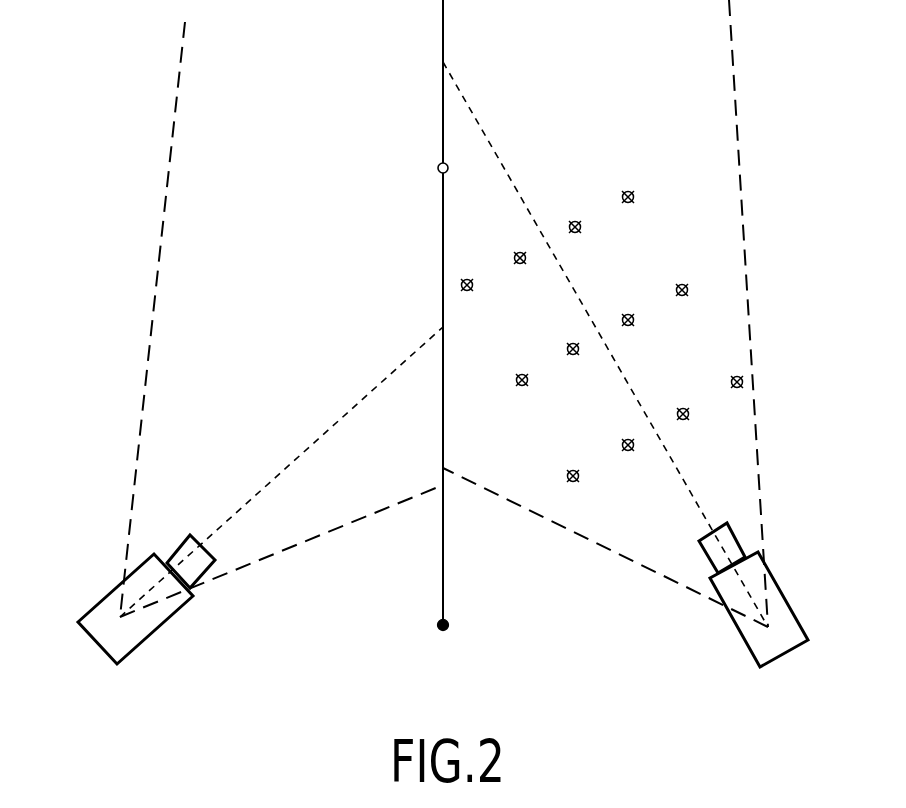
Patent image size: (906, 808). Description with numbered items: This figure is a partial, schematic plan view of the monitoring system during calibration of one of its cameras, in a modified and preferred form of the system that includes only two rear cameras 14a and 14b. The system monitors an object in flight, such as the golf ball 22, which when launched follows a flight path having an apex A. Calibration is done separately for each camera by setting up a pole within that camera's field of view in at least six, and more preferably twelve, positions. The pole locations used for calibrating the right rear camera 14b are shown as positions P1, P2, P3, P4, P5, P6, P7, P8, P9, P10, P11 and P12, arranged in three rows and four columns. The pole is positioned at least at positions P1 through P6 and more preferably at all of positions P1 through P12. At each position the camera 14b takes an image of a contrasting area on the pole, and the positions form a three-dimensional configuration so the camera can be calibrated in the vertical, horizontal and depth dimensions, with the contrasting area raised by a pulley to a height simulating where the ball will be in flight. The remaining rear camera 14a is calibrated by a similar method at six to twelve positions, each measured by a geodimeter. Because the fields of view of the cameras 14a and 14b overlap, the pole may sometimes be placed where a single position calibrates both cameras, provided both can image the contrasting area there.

The apex A is at (428, 168).
The rear camera 14a is at (93, 647).
The right rear camera 14b is at (783, 653).
The golf ball 22 is at (440, 632).
The pole position P1 is at (571, 469).
The pole position P2 is at (625, 438).
The pole position P3 is at (681, 407).
The pole position P4 is at (734, 375).
The pole position P5 is at (519, 374).
The pole position P6 is at (571, 343).
The pole position P7 is at (632, 314).
The pole position P8 is at (684, 284).
The pole position P9 is at (468, 279).
The pole position P10 is at (517, 252).
The pole position P11 is at (575, 221).
The pole position P12 is at (630, 191).